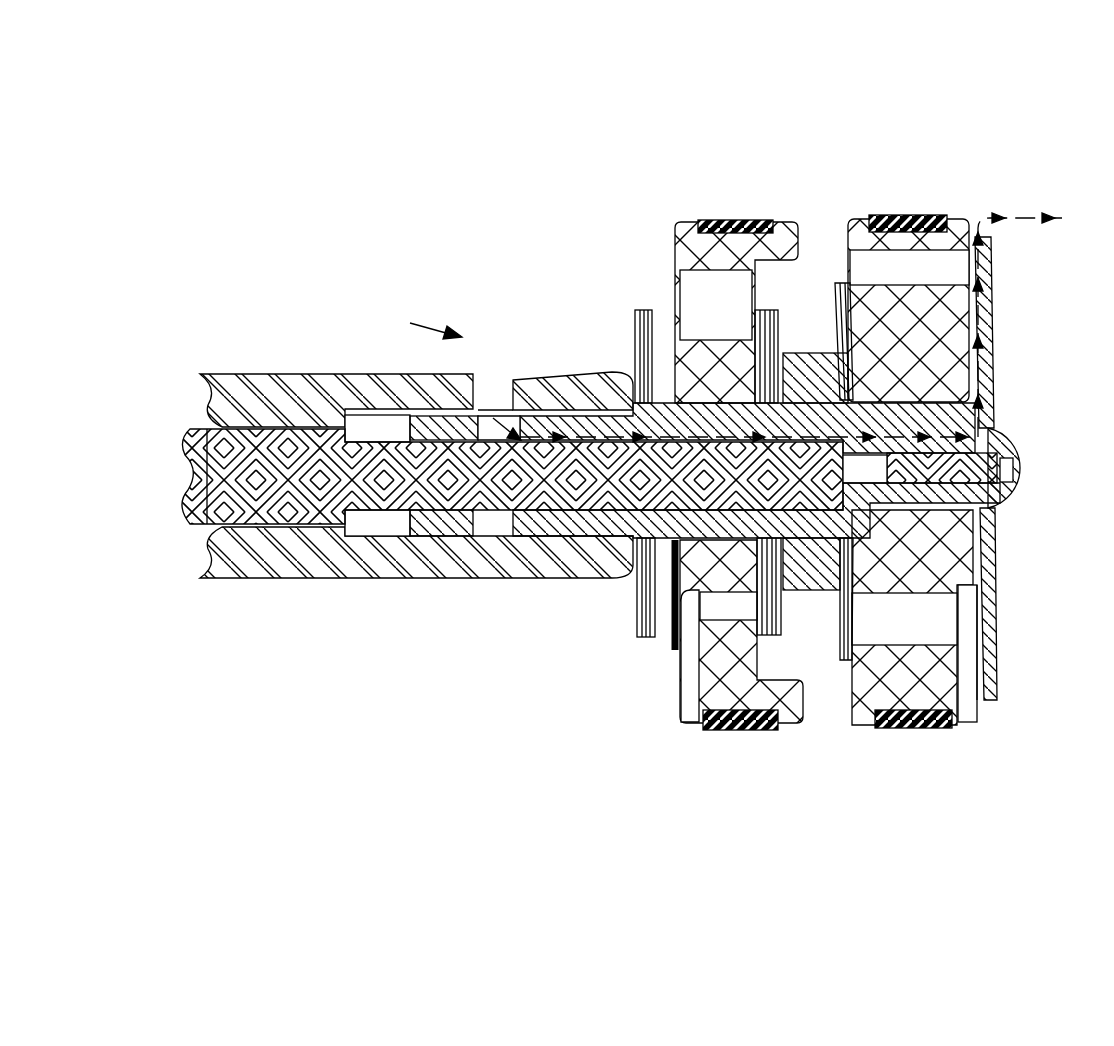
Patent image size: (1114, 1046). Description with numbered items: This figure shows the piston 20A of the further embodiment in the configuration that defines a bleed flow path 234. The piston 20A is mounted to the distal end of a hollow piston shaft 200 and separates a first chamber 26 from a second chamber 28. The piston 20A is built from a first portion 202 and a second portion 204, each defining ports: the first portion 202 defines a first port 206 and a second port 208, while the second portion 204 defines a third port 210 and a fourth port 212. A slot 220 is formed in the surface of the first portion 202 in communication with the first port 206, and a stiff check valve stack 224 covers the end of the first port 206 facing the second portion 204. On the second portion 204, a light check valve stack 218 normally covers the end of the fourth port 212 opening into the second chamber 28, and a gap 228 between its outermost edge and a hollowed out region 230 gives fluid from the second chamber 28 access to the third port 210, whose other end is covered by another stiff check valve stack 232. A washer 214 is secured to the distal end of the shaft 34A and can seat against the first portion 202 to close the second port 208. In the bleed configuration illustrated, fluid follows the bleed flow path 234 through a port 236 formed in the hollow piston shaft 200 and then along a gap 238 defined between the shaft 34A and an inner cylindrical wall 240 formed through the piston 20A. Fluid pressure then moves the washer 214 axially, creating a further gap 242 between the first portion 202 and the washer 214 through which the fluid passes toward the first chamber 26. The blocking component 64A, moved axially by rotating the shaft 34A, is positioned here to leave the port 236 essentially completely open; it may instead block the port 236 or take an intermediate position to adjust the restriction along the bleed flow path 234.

The piston 20A is at (1017, 114).
The first chamber 26 is at (1090, 431).
The second chamber 28 is at (378, 282).
The shaft 34A is at (180, 528).
The blocking component 64A is at (410, 428).
The hollow piston shaft 200 is at (262, 580).
The first portion 202 is at (860, 217).
The second portion 204 is at (687, 222).
The first port 206 is at (928, 640).
The second port 208 is at (928, 284).
The third port 210 is at (742, 617).
The fourth port 212 is at (735, 322).
The washer 214 is at (995, 553).
The light check valve stack 218 is at (673, 657).
The slot 220 is at (965, 703).
The stiff check valve stack 224 is at (842, 300).
The gap 228 is at (680, 705).
The hollowed out region 230 is at (685, 670).
The stiff check valve stack 232 is at (787, 627).
The bleed flow path 234 is at (488, 399).
The port 236 is at (503, 402).
The gap 238 is at (530, 505).
The inner cylindrical wall 240 is at (613, 505).
The further gap 242 is at (982, 690).